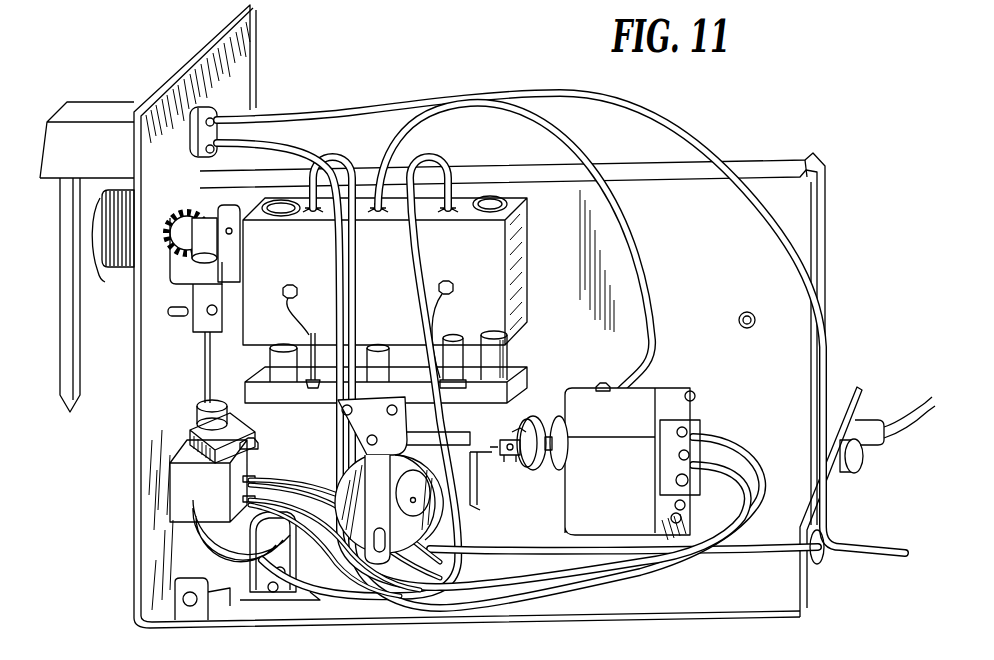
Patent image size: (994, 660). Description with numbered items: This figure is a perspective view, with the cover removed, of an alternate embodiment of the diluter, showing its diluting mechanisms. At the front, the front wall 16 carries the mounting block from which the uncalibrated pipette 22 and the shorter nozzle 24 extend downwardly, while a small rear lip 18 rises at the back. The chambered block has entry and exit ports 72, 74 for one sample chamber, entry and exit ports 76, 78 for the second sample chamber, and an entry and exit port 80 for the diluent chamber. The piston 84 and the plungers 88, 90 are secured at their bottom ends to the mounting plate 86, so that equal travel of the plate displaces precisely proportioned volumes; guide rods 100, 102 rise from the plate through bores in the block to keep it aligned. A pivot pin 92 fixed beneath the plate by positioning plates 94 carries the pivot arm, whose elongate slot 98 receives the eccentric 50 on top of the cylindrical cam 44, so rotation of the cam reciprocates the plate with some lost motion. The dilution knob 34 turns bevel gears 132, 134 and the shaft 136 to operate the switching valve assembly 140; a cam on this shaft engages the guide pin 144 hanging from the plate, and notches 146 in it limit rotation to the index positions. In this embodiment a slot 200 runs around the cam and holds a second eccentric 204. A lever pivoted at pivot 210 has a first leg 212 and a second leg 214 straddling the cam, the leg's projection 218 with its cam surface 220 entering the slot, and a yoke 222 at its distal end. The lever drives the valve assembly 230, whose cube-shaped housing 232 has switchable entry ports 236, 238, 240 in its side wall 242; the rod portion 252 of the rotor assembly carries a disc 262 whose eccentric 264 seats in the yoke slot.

The front wall 16 is at (138, 492).
The rear lip 18 is at (840, 485).
The pipette 22 is at (78, 352).
The nozzle 24 is at (98, 270).
The dilution knob 34 is at (120, 205).
The cam 44 is at (347, 517).
The eccentric 50 is at (380, 566).
The entry port 72 is at (283, 295).
The exit port 74 is at (312, 214).
The entry port 76 is at (453, 288).
The exit port 78 is at (449, 214).
The entry and exit port 80 is at (378, 214).
The piston 84 is at (380, 358).
The mounting plate 86 is at (520, 378).
The plunger 88 is at (311, 375).
The plunger 90 is at (456, 352).
The pivot pin 92 is at (348, 418).
The positioning plates 94 is at (410, 402).
The elongate slot 98 is at (380, 528).
The guide rod 100 is at (275, 355).
The guide rod 102 is at (515, 350).
The bevel gear 132 is at (190, 214).
The bevel gear 134 is at (215, 262).
The shaft 136 is at (207, 342).
The switching valve assembly 140 is at (177, 505).
The guide pin 144 is at (243, 425).
The notches 146 is at (250, 447).
The slot 200 is at (432, 565).
The second eccentric 204 is at (650, 363).
The pivot 210 is at (405, 438).
The first leg 212 is at (477, 480).
The second leg 214 is at (327, 480).
The projection 218 is at (335, 510).
The cam surface 220 is at (365, 537).
The yoke 222 is at (515, 428).
The valve assembly 230 is at (612, 392).
The housing 232 is at (657, 392).
The switchable entry port 236 is at (667, 462).
The switchable entry port 238 is at (670, 492).
The switchable entry port 240 is at (698, 442).
The side wall 242 is at (694, 414).
The rod portion 252 is at (562, 420).
The disc 262 is at (528, 470).
The eccentric 264 is at (520, 437).